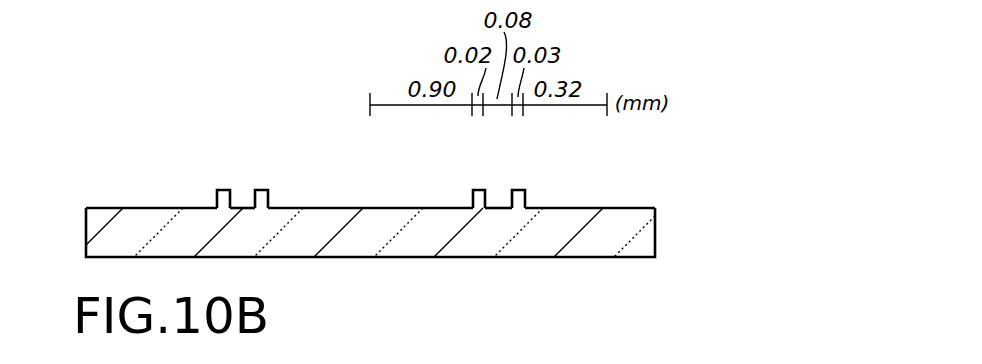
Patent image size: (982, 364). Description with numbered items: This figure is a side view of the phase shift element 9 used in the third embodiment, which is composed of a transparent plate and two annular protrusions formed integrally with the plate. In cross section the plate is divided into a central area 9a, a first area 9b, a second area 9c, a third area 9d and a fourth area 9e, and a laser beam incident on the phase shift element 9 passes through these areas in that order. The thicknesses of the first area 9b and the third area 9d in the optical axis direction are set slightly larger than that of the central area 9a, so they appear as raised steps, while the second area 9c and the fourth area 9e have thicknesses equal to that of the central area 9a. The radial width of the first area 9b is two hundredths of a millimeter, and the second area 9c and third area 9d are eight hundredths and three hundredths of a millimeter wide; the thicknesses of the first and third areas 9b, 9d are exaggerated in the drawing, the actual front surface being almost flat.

The phase shift element 9 is at (661, 199).
The central area 9a is at (383, 208).
The first area 9b is at (256, 192).
The second area 9c is at (243, 208).
The third area 9d is at (217, 190).
The fourth area 9e is at (112, 208).